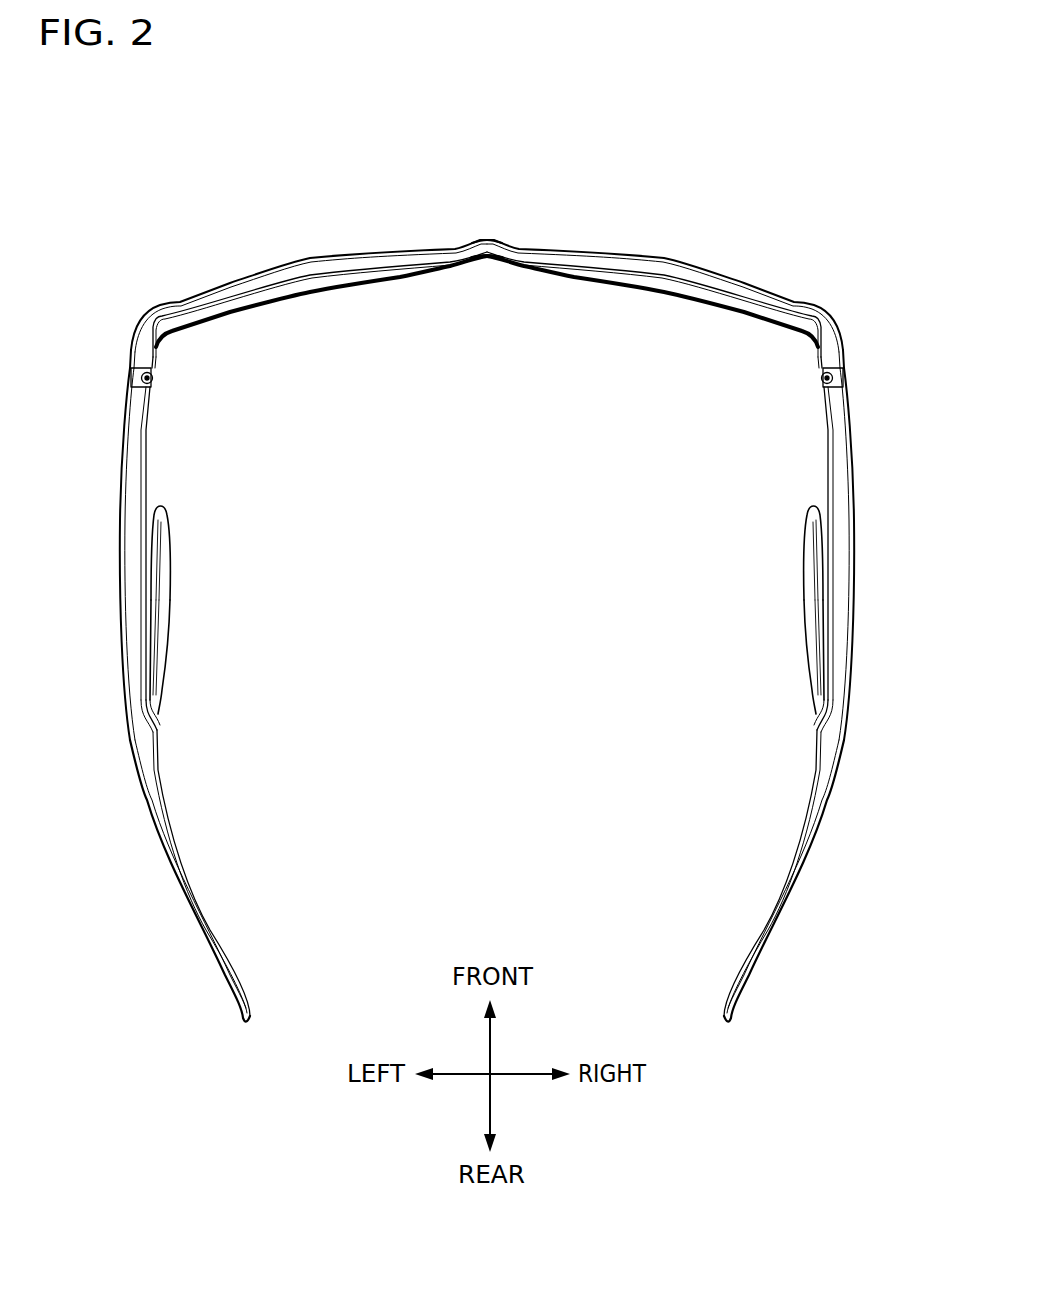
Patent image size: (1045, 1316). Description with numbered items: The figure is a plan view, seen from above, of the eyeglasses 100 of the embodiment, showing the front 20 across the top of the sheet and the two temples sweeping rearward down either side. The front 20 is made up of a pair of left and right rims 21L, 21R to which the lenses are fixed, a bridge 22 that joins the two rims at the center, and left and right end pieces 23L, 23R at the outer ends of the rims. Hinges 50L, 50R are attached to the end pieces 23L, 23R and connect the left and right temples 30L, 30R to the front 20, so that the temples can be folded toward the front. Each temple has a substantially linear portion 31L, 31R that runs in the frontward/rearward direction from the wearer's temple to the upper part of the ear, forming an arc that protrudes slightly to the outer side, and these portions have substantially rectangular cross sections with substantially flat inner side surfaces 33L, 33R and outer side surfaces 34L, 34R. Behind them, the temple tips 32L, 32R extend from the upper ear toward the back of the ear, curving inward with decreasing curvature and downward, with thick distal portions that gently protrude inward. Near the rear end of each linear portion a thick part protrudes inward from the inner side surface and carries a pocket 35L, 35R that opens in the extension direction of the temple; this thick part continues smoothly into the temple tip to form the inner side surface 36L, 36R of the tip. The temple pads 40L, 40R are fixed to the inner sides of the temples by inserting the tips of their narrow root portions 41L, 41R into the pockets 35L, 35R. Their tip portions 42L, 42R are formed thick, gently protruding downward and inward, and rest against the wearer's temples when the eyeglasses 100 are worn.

The eyeglasses 100 is at (632, 130).
The front 20 is at (493, 324).
The left rim 21L is at (304, 268).
The right rim 21R is at (665, 268).
The bridge 22 is at (487, 255).
The left end piece 23L is at (130, 346).
The right end piece 23R is at (844, 346).
The left hinge 50L is at (154, 378).
The right hinge 50R is at (820, 378).
The left temple 30L is at (109, 569).
The right temple 30R is at (865, 569).
The left substantially linear portion 31L is at (125, 497).
The right substantially linear portion 31R is at (849, 497).
The left temple tip 32L is at (170, 857).
The right temple tip 32R is at (804, 857).
The left inner side surface 33L is at (149, 449).
The right inner side surface 33R is at (825, 449).
The left outer side surface 34L is at (119, 451).
The right outer side surface 34R is at (855, 451).
The left pocket 35L is at (162, 721).
The right pocket 35R is at (812, 721).
The left inner side surface of temple tip 36L is at (168, 795).
The right inner side surface of temple tip 36R is at (806, 795).
The left temple pad 40L is at (180, 602).
The right temple pad 40R is at (794, 602).
The left root portion 41L is at (160, 688).
The right root portion 41R is at (814, 688).
The left tip portion 42L is at (168, 545).
The right tip portion 42R is at (806, 545).